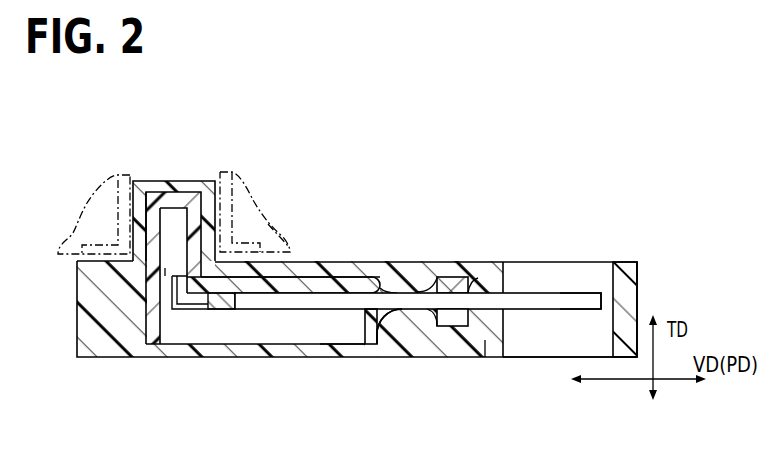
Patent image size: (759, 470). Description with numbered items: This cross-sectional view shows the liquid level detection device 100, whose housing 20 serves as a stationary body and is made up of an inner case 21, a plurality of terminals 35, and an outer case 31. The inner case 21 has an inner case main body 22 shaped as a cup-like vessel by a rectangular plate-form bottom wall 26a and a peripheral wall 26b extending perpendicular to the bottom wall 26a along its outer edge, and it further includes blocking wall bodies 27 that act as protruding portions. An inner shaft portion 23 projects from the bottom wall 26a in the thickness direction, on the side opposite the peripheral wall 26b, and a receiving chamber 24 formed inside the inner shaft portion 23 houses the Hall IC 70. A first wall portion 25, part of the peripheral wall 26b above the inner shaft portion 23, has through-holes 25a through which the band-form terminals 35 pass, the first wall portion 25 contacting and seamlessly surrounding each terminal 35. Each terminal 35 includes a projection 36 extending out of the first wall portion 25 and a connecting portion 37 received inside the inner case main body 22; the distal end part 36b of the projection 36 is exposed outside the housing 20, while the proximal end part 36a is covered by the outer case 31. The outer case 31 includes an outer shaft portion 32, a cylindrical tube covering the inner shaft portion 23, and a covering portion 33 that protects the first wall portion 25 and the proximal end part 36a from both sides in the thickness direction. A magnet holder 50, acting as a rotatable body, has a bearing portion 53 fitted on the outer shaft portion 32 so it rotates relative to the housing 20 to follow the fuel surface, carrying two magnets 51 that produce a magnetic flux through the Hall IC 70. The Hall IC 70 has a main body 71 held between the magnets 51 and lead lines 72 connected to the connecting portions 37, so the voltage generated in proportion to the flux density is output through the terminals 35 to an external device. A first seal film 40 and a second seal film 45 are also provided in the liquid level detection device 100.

The liquid level detection device 100 is at (672, 235).
The housing 20 is at (622, 262).
The inner case 21 is at (327, 222).
The inner case main body 22 is at (360, 261).
The inner shaft portion 23 is at (157, 191).
The receiving chamber 24 is at (157, 253).
The first wall portion 25 is at (372, 344).
The through-holes 25a is at (338, 345).
The bottom wall 26a is at (323, 261).
The peripheral wall 26b is at (152, 341).
The blocking wall bodies 27 is at (448, 276).
The outer case 31 is at (497, 262).
The outer shaft portion 32 is at (193, 181).
The covering portion 33 is at (497, 350).
The terminals 35 is at (270, 344).
The projection 36 is at (460, 293).
The proximal end part 36a is at (413, 312).
The distal end part 36b is at (570, 293).
The connecting portion 37 is at (215, 312).
The first seal film 40 is at (380, 332).
The second seal film 45 is at (473, 322).
The magnet holder 50 is at (73, 263).
The magnets 51 is at (281, 238).
The bearing portion 53 is at (213, 162).
The Hall IC 70 is at (172, 209).
The main body 71 is at (165, 268).
The lead lines 72 is at (178, 344).